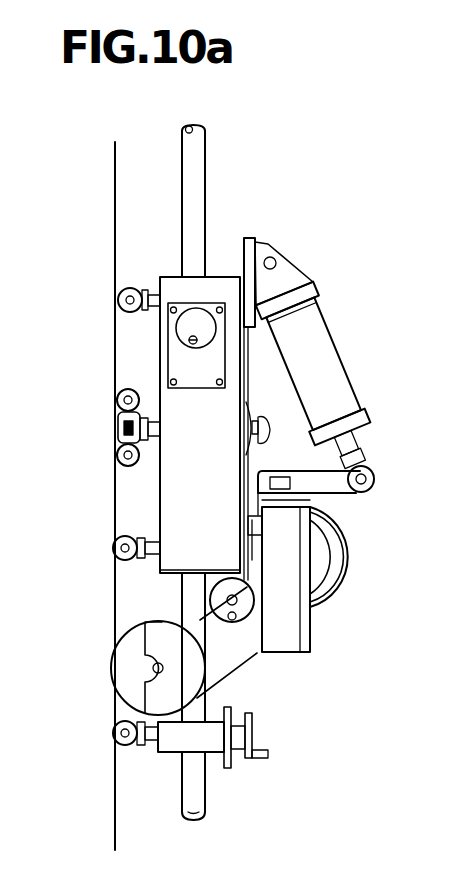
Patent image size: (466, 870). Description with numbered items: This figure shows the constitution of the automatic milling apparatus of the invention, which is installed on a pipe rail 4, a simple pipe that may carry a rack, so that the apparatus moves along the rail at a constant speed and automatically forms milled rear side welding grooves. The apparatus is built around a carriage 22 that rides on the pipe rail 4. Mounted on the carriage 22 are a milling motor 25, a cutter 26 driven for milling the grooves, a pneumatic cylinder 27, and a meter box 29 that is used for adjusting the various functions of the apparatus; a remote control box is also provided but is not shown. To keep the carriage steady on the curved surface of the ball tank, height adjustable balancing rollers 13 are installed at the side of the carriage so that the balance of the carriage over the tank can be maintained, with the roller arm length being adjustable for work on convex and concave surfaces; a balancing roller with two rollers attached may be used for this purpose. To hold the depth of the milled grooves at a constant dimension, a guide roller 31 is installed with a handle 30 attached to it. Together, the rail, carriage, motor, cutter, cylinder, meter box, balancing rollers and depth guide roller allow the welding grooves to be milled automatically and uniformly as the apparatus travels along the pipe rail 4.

The pipe rail 4 is at (193, 189).
The balancing roller 13 is at (118, 303).
The carriage 22 is at (150, 491).
The milling motor 25 is at (410, 569).
The cutter 26 is at (118, 677).
The pneumatic cylinder 27 is at (323, 356).
The meter box 29 is at (293, 647).
The handle 30 is at (261, 760).
The guide roller 31 is at (118, 742).